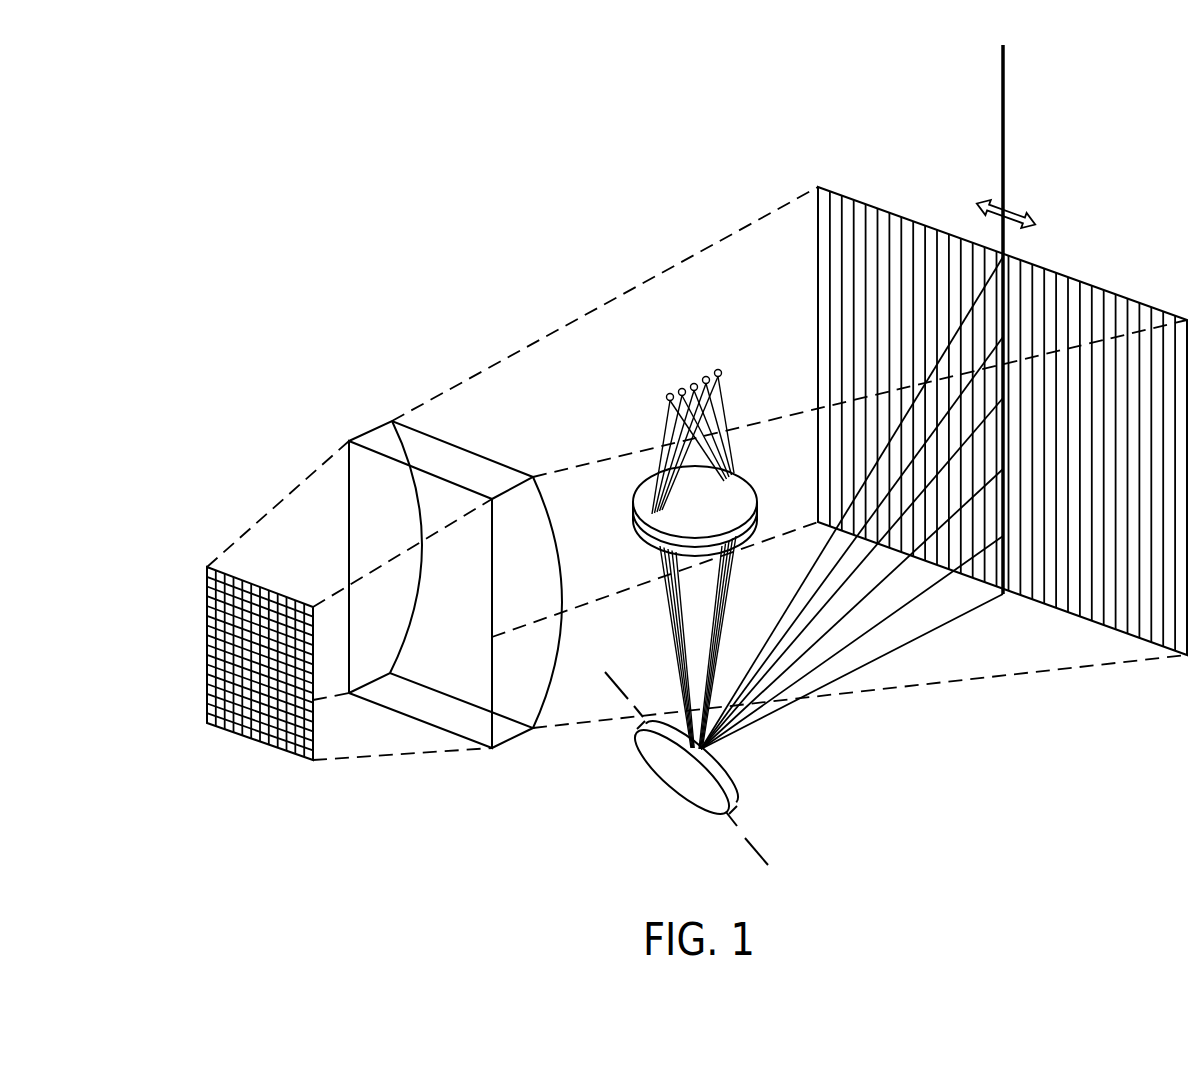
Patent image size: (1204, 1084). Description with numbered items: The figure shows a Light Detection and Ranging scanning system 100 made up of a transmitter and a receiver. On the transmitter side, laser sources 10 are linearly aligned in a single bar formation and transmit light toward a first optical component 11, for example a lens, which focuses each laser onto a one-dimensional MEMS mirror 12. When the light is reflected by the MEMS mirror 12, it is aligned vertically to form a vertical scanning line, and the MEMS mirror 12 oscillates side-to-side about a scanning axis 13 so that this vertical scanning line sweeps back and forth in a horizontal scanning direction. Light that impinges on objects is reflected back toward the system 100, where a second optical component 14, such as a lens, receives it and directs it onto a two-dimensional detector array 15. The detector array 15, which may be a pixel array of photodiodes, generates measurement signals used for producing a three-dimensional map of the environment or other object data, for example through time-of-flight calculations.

The LiDAR scanning system 100 is at (276, 200).
The laser sources 10 is at (699, 360).
The first optical component 11 is at (743, 500).
The one-dimensional MEMS mirror 12 is at (728, 774).
The scanning axis 13 is at (742, 838).
The second optical component 14 is at (380, 438).
The two-dimensional detector array 15 is at (207, 635).